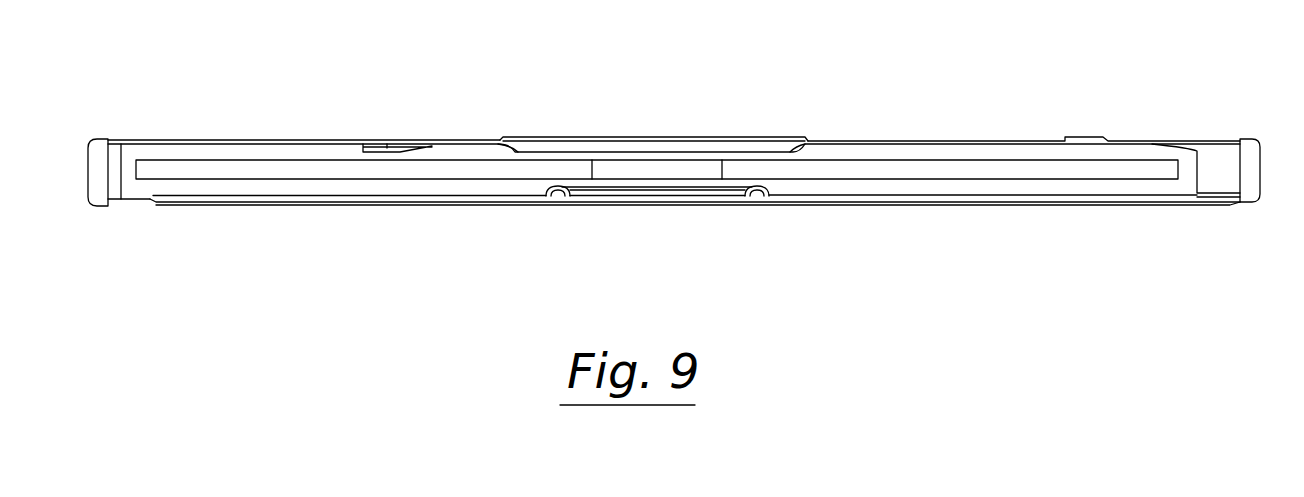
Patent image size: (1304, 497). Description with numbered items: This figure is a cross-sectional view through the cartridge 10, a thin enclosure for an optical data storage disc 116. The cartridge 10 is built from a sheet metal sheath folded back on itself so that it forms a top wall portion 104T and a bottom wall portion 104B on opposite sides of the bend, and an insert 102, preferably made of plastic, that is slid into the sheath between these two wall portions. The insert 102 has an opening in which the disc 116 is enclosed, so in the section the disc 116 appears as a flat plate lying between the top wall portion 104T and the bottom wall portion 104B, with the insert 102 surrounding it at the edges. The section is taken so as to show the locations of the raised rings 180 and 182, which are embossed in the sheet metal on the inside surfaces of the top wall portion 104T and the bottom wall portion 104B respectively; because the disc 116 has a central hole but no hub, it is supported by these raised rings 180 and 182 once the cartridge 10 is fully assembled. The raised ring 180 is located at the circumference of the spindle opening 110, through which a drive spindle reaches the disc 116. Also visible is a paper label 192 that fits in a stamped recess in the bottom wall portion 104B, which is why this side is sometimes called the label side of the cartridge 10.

The cartridge 10 is at (1053, 79).
The insert 102 is at (100, 163).
The top wall portion 104T is at (250, 140).
The bottom wall portion 104B is at (440, 200).
The spindle opening 110 is at (666, 118).
The optical data storage disc 116 is at (848, 170).
The raised ring 180 is at (505, 128).
The raised ring 182 is at (748, 212).
The paper label 192 is at (1005, 206).